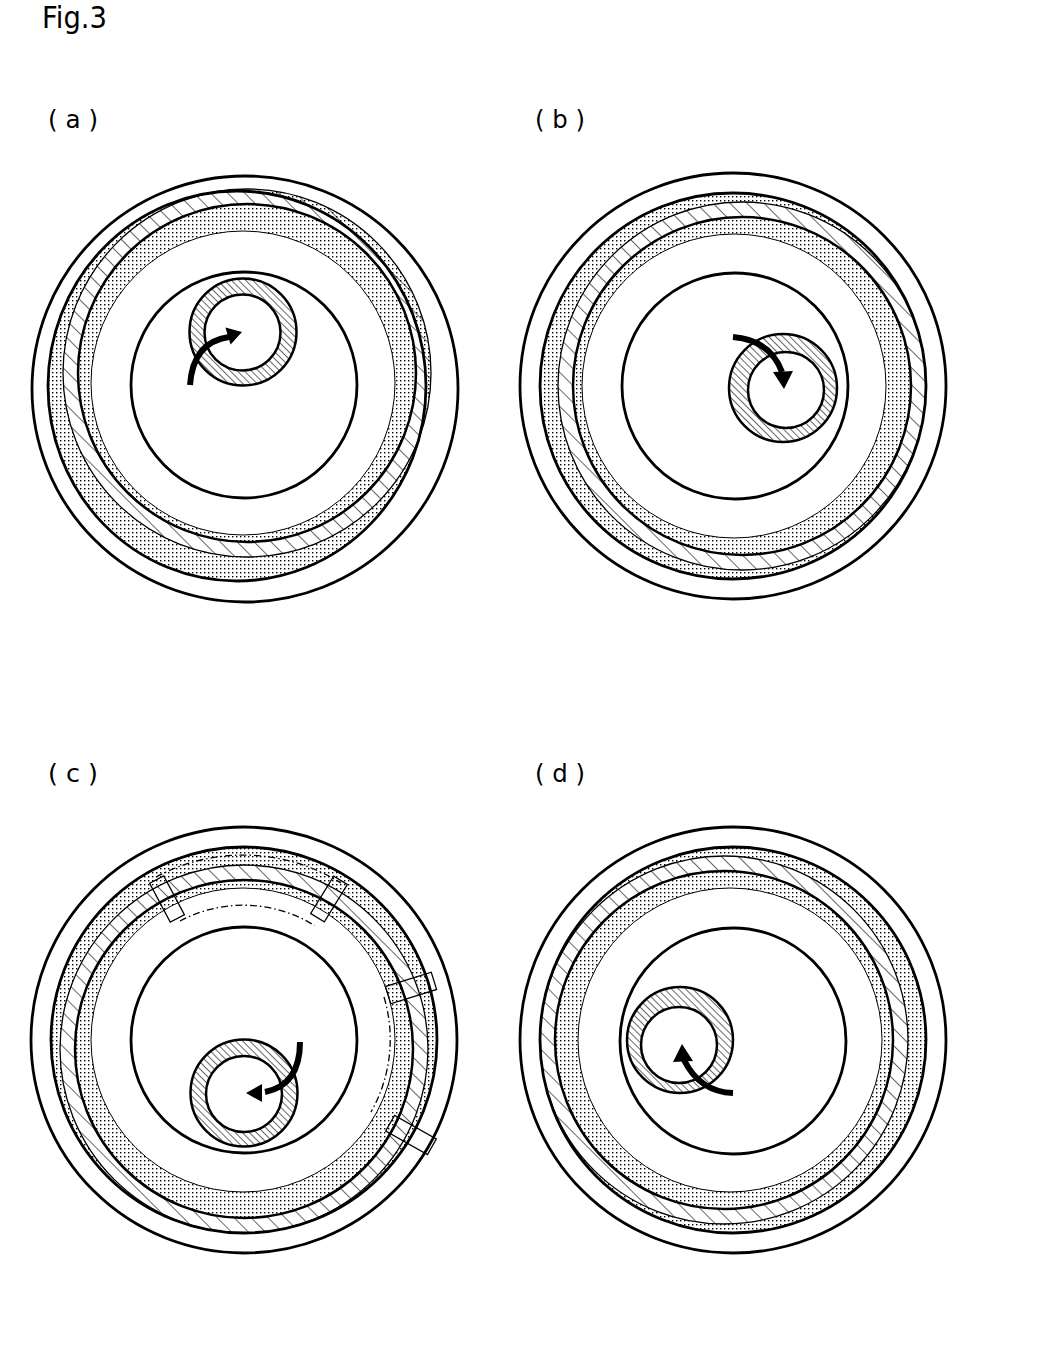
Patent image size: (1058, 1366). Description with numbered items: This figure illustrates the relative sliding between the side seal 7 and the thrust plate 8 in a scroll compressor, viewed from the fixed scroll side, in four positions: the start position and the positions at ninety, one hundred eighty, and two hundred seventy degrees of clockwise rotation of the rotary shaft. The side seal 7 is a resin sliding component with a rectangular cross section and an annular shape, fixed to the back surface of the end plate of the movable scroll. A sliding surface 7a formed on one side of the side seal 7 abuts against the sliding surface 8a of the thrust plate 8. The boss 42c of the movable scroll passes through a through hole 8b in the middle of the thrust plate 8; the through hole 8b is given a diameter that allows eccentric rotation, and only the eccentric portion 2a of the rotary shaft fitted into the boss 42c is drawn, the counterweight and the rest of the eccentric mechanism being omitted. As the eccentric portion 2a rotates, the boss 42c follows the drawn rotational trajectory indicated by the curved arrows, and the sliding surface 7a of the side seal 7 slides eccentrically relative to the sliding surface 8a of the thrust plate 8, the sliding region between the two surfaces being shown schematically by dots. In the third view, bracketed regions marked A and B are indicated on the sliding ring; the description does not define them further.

The thrust plate 8 is at (206, 165).
The sliding surface of the thrust plate 8a is at (242, 188).
The through hole 8b is at (160, 436).
The side seal 7 is at (302, 190).
The sliding surface of the side seal 7a is at (355, 233).
The eccentric portion 2a is at (240, 353).
The boss 42c is at (291, 355).
The region A is at (283, 862).
The region B is at (405, 998).